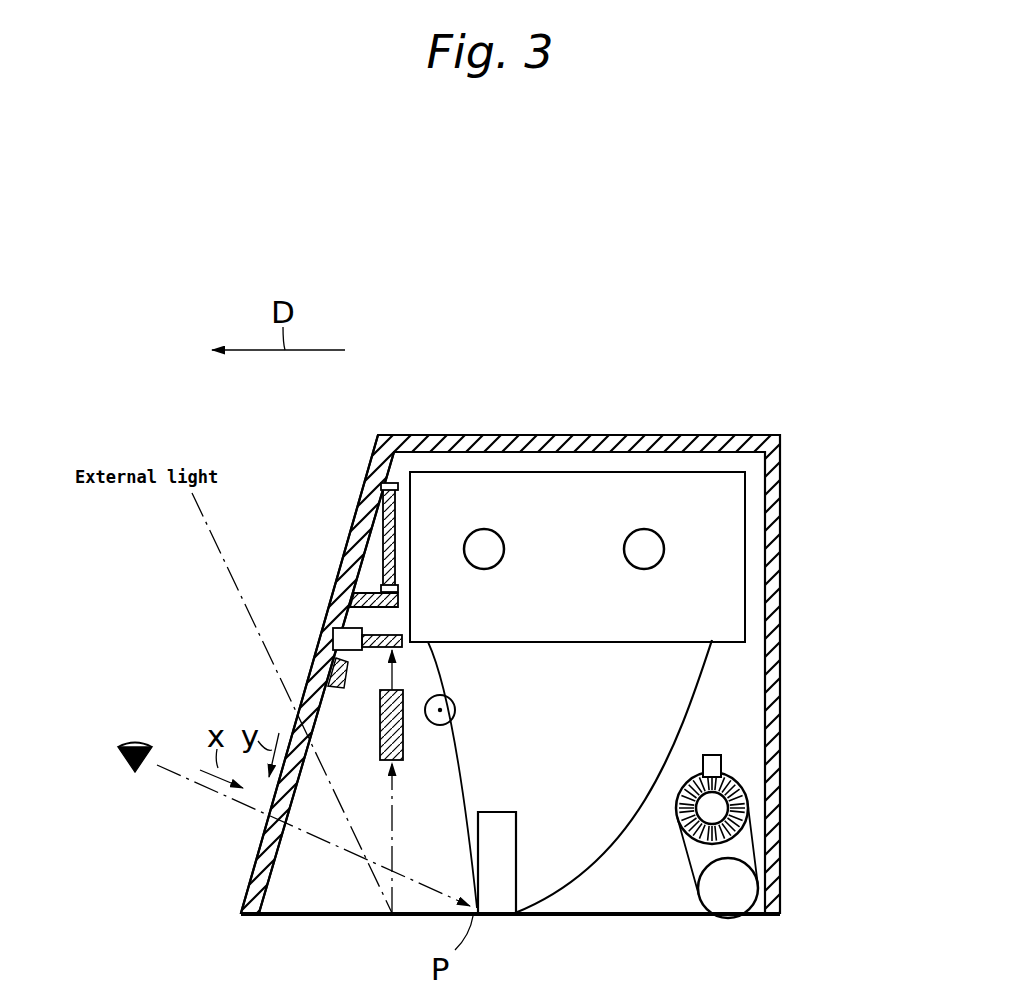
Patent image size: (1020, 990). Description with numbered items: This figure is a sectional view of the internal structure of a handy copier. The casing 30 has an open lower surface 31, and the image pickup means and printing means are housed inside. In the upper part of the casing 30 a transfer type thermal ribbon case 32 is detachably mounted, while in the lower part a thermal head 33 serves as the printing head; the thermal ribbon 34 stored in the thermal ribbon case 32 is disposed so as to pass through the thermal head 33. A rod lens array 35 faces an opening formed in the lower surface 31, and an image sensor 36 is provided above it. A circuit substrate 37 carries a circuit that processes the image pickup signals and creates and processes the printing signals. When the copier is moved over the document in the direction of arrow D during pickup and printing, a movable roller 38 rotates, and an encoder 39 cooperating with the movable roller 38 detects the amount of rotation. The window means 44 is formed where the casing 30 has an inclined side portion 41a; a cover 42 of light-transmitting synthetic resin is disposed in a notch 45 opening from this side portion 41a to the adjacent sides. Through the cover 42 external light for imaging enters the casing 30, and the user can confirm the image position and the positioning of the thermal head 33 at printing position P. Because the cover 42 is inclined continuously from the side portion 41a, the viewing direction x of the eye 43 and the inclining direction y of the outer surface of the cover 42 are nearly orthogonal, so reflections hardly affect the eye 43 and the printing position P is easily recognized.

The casing 30 is at (722, 436).
The lower surface 31 is at (312, 916).
The transfer type thermal ribbon case 32 is at (722, 548).
The thermal head 33 is at (510, 908).
The thermal ribbon 34 is at (607, 853).
The rod lens array 35 is at (405, 740).
The image sensor 36 is at (381, 648).
The circuit substrate 37 is at (400, 518).
The movable roller 38 is at (733, 905).
The encoder 39 is at (735, 787).
The side portion 41a is at (352, 555).
The cover 42 is at (253, 876).
The eye 43 is at (137, 748).
The window means 44 is at (223, 672).
The notch 45 is at (313, 680).